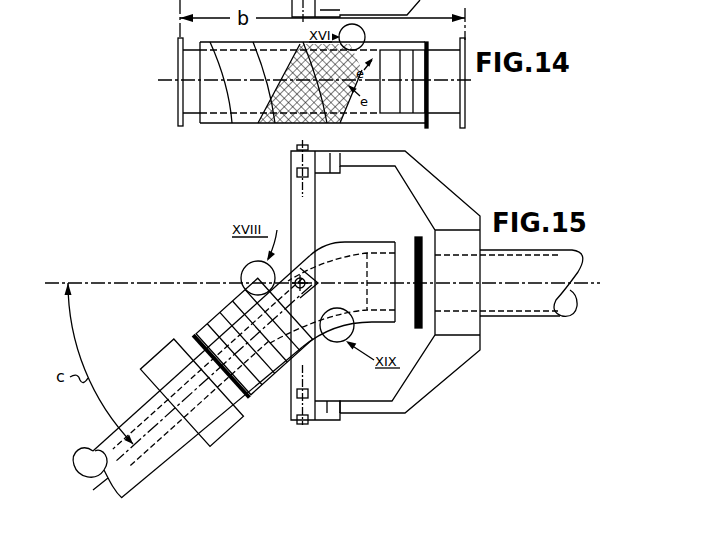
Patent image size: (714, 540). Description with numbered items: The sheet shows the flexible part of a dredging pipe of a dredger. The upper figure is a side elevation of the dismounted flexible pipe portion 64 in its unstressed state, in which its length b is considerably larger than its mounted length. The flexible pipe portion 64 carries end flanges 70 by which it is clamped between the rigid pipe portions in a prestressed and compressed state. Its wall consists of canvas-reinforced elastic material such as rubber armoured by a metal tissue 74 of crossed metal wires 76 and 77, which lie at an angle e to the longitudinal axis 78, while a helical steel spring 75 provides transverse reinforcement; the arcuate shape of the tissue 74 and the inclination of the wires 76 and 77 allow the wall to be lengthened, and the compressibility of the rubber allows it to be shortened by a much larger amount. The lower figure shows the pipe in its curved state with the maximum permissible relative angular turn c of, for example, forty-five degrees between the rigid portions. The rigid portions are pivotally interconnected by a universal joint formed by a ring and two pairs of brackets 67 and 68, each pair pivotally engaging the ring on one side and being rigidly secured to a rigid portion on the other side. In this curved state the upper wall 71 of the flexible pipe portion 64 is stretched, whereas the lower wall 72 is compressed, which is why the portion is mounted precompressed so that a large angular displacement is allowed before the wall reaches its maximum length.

In FIG. 14, the flexible pipe portion 64 is at (255, 130).
In FIG. 14, the flanges 70 is at (188, 108).
In FIG. 14, the metal tissue 74 is at (293, 127).
In FIG. 14, the helical steel spring 75 is at (223, 90).
In FIG. 14, the tissue wire 76 is at (347, 93).
In FIG. 14, the tissue wire 77 is at (265, 126).
In FIG. 14, the longitudinal axis 78 is at (430, 87).
In FIG. 15, the brackets 67 is at (237, 335).
In FIG. 15, the brackets 68 is at (448, 210).
In FIG. 15, the upper wall 71 is at (355, 239).
In FIG. 15, the lower wall 72 is at (271, 380).